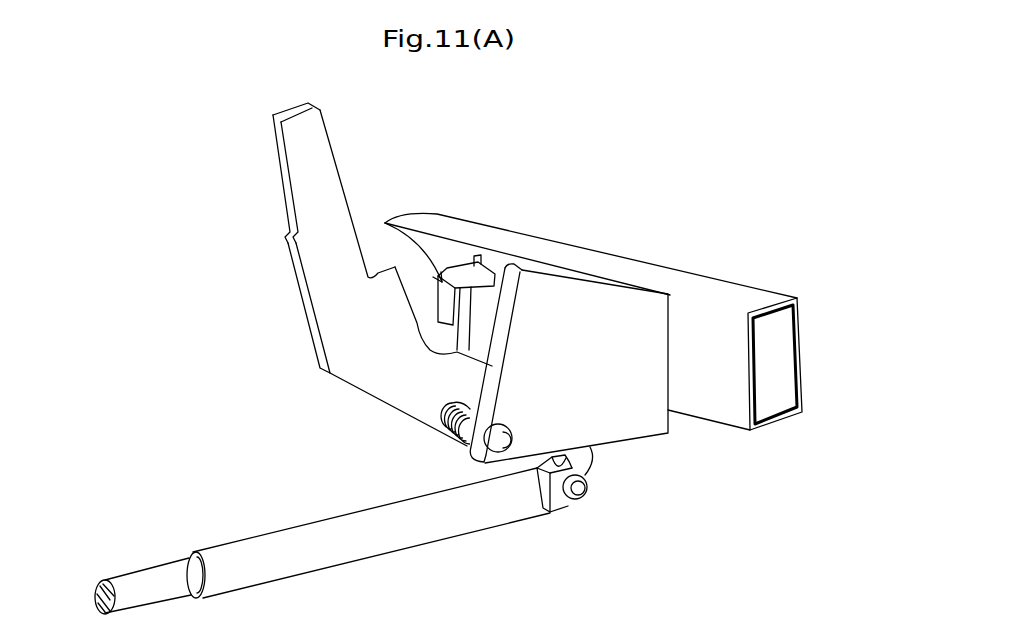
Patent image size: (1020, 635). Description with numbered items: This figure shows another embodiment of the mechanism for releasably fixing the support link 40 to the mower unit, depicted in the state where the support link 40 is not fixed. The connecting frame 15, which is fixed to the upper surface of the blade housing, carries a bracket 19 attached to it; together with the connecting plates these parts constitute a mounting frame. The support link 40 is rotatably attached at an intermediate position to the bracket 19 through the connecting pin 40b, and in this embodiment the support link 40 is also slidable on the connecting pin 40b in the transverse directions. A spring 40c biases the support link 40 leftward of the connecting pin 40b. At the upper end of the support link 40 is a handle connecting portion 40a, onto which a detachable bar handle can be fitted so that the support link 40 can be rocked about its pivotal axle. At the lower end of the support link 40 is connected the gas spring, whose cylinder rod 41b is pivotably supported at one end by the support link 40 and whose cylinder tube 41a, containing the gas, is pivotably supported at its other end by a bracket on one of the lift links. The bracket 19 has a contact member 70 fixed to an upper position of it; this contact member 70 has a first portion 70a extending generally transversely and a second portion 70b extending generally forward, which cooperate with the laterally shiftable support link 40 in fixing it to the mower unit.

The connecting frame 15 is at (685, 273).
The bracket 19 is at (630, 407).
The support link 40 is at (343, 300).
The handle connecting portion 40a is at (288, 183).
The connecting pin 40b is at (507, 440).
The spring 40c is at (458, 437).
The contact member 70 is at (385, 223).
The first portion 70a is at (450, 266).
The second portion 70b is at (493, 283).
The cylinder tube 41a is at (332, 520).
The cylinder rod 41b is at (143, 572).